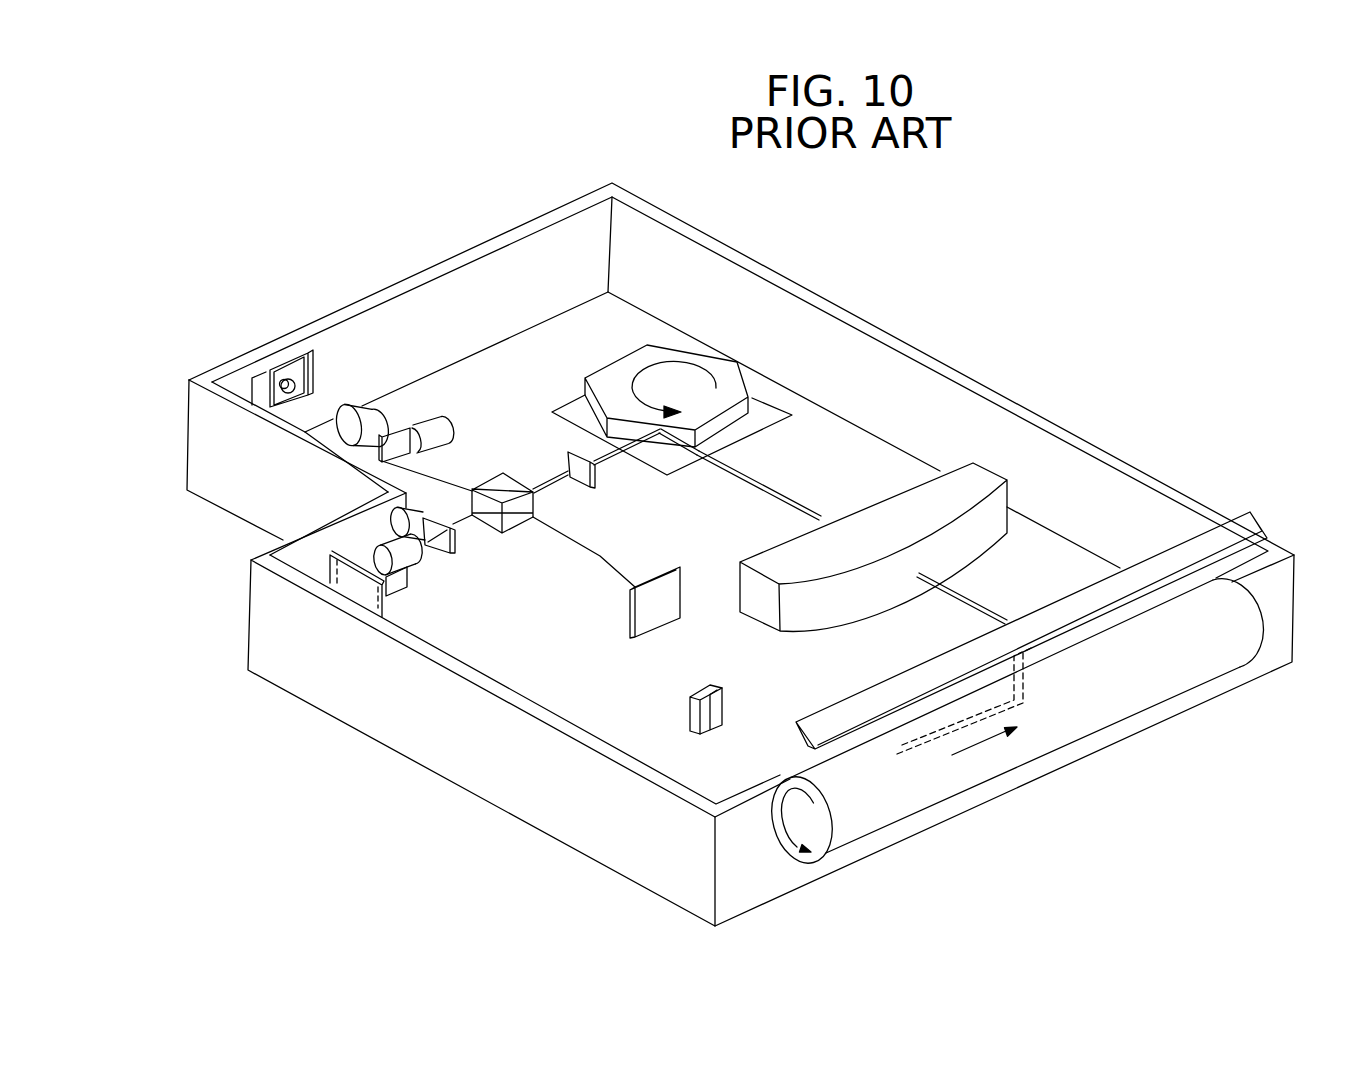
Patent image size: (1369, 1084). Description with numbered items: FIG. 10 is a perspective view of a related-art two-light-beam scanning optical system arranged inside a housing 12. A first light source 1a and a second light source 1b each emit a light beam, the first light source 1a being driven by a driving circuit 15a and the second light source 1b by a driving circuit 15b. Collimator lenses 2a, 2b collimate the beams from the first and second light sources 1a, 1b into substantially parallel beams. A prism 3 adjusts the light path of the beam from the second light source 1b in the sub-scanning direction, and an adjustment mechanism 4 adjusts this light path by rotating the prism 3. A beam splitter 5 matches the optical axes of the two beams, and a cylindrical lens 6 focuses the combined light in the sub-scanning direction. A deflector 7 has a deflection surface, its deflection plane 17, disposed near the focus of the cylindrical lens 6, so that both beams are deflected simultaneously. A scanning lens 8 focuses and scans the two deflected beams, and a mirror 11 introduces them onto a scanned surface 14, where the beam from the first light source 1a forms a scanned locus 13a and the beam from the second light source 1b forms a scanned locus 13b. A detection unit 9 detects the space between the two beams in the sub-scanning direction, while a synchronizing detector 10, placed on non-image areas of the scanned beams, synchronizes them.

The first light source 1a is at (350, 557).
The second light source 1b is at (294, 366).
The collimator lens 2a is at (413, 560).
The collimator lens 2b is at (357, 409).
The prism 3 is at (398, 424).
The adjustment mechanism 4 is at (440, 423).
The beam splitter 5 is at (512, 480).
The cylindrical lens 6 is at (585, 477).
The deflector 7 is at (683, 375).
The scanning lens 8 is at (973, 465).
The detection unit 9 is at (688, 712).
The synchronizing detector 10 is at (722, 703).
The mirror 11 is at (1197, 546).
The housing 12 is at (377, 723).
The scanned locus 13a is at (935, 742).
The scanned locus 13b is at (917, 745).
The scanned surface 14 is at (1210, 668).
The driving circuit 15a is at (306, 583).
The driving circuit 15b is at (257, 380).
The deflection plane 17 is at (686, 440).